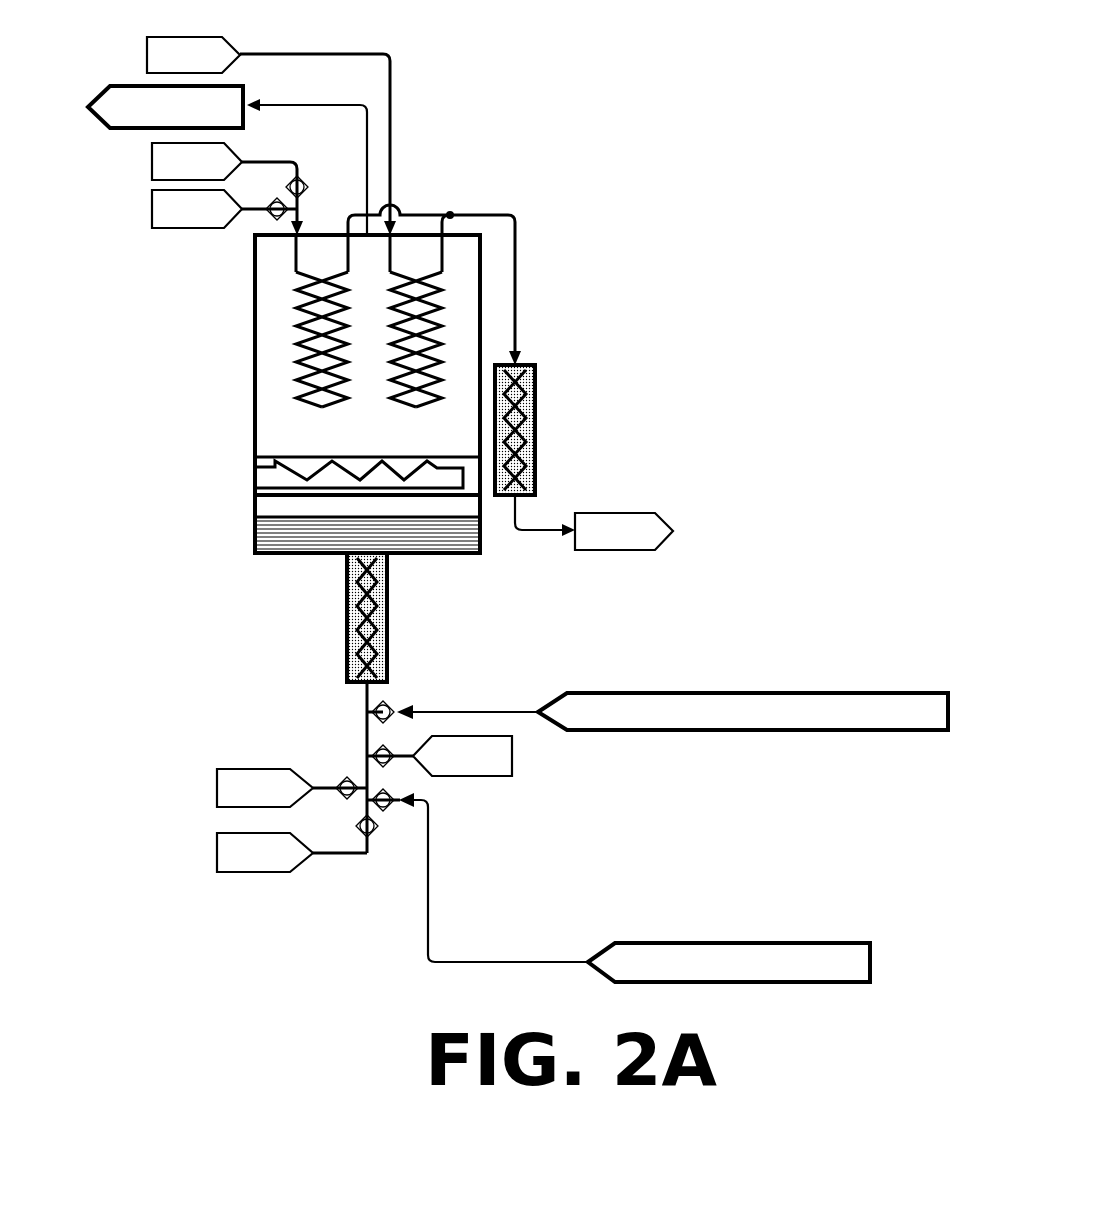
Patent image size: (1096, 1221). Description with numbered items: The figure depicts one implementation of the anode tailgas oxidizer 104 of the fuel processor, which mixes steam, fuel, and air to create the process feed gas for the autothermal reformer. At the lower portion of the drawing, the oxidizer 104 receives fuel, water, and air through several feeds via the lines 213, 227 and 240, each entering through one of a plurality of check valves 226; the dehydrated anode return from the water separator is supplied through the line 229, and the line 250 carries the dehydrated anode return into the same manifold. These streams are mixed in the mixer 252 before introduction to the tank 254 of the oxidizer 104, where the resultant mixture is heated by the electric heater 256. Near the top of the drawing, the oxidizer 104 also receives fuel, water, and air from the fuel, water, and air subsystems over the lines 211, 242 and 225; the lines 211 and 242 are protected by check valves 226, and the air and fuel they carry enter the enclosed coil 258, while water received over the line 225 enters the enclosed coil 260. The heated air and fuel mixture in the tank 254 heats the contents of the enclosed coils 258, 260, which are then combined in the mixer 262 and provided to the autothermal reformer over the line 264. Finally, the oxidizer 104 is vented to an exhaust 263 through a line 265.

The anode tailgas oxidizer 104 is at (542, 96).
The line 211 is at (264, 162).
The line 213 is at (325, 792).
The line 225 is at (337, 53).
The check valve 226 is at (333, 170).
The line 227 is at (430, 817).
The line 229 is at (404, 752).
The line 240 is at (343, 857).
The line 242 is at (224, 199).
The dehydrated anode return line 250 is at (505, 711).
The mixer 252 is at (388, 626).
The tank 254 is at (252, 533).
The electric heater 256 is at (276, 465).
The enclosed coil 258 is at (328, 408).
The enclosed coil 260 is at (416, 408).
The mixer 262 is at (537, 364).
The exhaust 263 is at (92, 92).
The line 264 is at (545, 535).
The line 265 is at (298, 106).